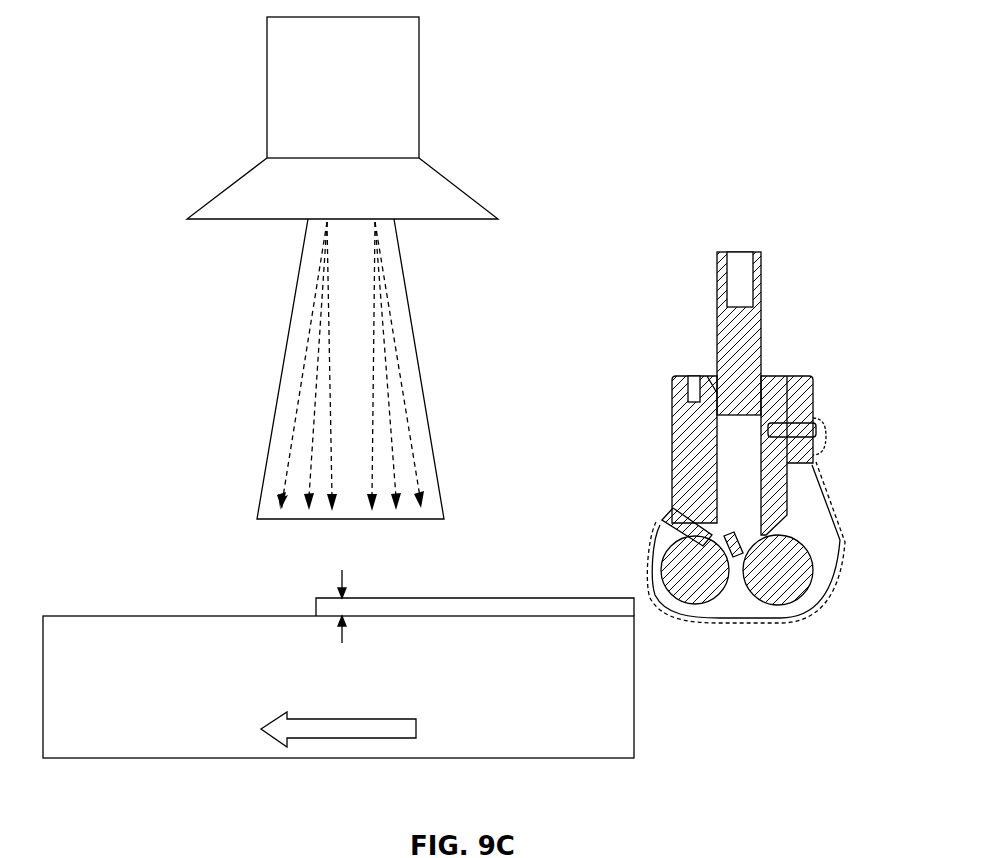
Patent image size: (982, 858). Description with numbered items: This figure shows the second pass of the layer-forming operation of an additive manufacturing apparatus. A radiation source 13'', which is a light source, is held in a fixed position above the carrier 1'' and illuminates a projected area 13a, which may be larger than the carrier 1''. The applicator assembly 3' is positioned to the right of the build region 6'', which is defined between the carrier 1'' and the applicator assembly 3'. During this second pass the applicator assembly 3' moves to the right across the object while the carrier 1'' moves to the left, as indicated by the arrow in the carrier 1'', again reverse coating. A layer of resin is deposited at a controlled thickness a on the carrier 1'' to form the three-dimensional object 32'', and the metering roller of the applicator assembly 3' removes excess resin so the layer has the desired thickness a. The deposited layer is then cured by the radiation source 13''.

The radiation source 13'' is at (342, 118).
The projected area 13a is at (420, 375).
The carrier 1'' is at (338, 659).
The three-dimensional object 32'' is at (483, 578).
The controlled thickness a is at (338, 610).
The build region 6'' is at (218, 504).
The applicator assembly 3' is at (765, 437).